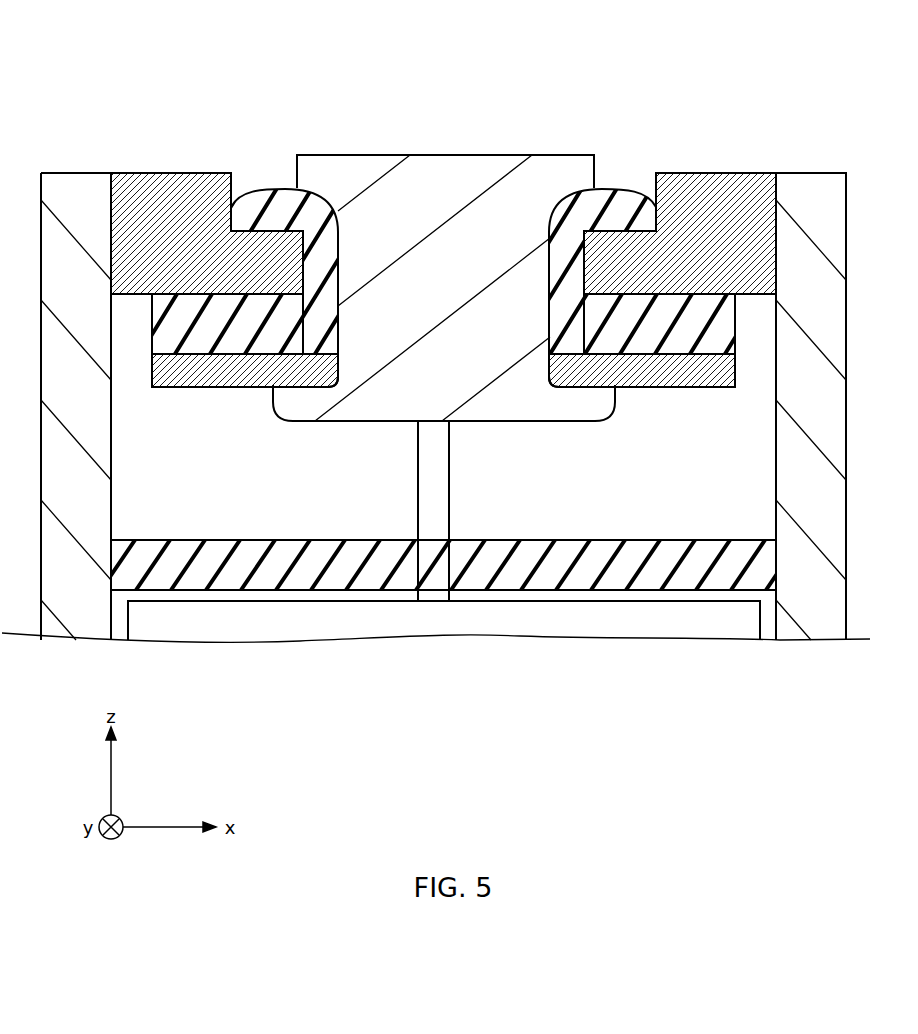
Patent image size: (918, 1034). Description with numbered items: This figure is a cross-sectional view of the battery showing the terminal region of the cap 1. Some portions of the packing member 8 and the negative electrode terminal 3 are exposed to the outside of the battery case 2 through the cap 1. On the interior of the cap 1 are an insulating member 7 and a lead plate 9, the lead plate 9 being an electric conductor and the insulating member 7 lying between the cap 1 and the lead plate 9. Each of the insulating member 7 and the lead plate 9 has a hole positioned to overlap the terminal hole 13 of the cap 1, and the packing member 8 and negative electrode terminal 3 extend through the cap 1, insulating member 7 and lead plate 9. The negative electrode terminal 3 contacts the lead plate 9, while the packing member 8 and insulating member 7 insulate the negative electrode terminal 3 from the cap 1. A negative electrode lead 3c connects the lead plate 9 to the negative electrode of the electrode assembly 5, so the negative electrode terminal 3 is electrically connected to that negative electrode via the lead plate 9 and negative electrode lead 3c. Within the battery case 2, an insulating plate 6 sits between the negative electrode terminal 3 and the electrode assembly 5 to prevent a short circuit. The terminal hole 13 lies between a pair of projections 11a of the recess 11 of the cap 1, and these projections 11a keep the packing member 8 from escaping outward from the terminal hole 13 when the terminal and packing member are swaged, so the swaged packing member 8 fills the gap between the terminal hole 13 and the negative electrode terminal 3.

The cap 1 is at (162, 213).
The battery case 2 is at (58, 222).
The negative electrode terminal 3 is at (437, 178).
The negative electrode lead 3c is at (432, 487).
The electrode assembly 5 is at (485, 623).
The insulating plate 6 is at (548, 558).
The insulating member 7 is at (152, 330).
The packing member 8 is at (328, 215).
The lead plate 9 is at (223, 370).
The recess 11 is at (278, 207).
The projections 11a is at (233, 200).
The terminal hole 13 is at (307, 282).